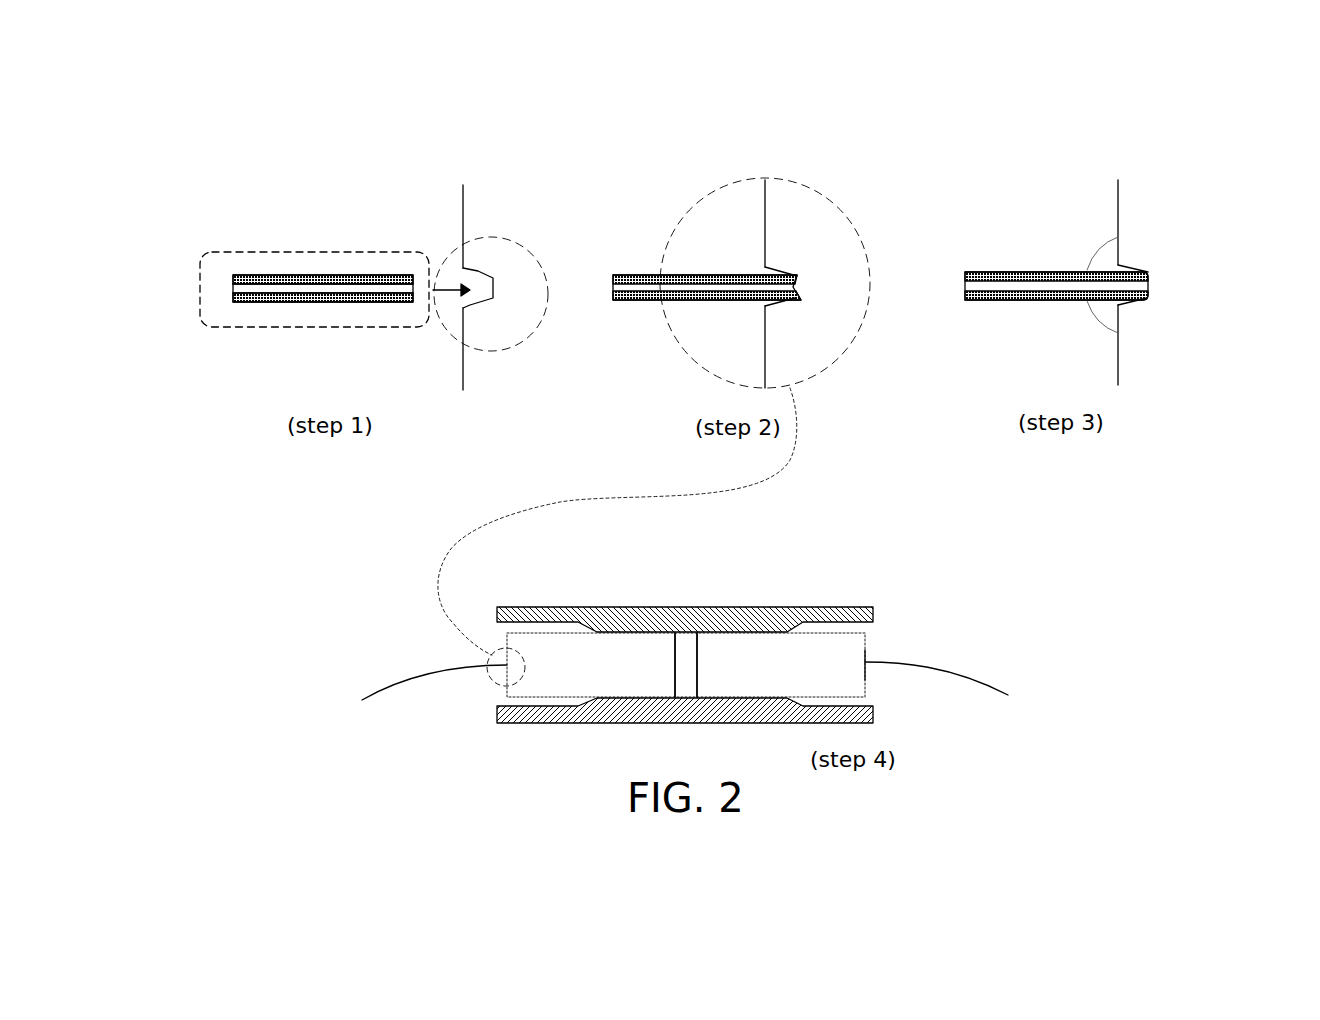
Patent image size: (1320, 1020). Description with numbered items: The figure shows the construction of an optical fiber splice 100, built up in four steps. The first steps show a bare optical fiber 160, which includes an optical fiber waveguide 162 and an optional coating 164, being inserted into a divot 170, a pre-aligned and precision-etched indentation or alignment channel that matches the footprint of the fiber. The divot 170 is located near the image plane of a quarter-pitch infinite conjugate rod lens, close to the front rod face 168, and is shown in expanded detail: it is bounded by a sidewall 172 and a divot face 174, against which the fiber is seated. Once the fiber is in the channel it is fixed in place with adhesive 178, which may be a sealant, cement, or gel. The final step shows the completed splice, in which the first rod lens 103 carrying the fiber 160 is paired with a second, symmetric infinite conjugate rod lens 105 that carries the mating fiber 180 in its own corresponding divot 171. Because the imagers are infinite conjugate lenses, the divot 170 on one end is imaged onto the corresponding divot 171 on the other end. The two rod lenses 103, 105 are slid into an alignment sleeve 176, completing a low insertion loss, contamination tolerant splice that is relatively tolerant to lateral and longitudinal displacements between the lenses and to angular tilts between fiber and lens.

The sensor assembly 100 is at (500, 795).
The imager 103 is at (602, 640).
The second symmetric infinite conjugate rod lens 105 is at (800, 642).
The bare optical fiber 160 is at (243, 329).
The optical fiber waveguide 162 is at (235, 291).
The coating 164 is at (263, 300).
The front rod face 168 is at (462, 369).
The divot 170 is at (515, 345).
The divot 171 is at (865, 665).
The sidewall 172 is at (477, 271).
The divot face 174 is at (495, 282).
The alignment sleeve 176 is at (678, 603).
The adhesive 178 is at (1115, 320).
The bare optical fiber 180 is at (975, 680).